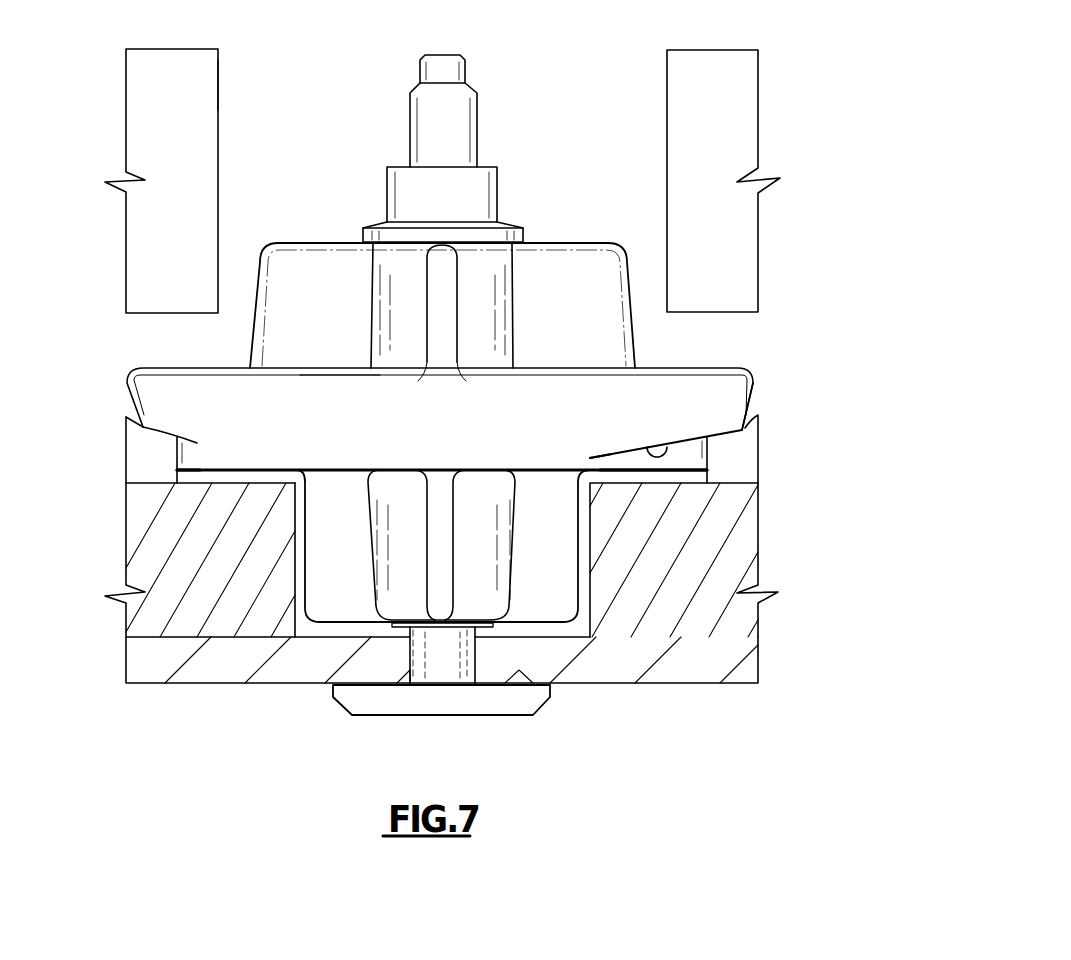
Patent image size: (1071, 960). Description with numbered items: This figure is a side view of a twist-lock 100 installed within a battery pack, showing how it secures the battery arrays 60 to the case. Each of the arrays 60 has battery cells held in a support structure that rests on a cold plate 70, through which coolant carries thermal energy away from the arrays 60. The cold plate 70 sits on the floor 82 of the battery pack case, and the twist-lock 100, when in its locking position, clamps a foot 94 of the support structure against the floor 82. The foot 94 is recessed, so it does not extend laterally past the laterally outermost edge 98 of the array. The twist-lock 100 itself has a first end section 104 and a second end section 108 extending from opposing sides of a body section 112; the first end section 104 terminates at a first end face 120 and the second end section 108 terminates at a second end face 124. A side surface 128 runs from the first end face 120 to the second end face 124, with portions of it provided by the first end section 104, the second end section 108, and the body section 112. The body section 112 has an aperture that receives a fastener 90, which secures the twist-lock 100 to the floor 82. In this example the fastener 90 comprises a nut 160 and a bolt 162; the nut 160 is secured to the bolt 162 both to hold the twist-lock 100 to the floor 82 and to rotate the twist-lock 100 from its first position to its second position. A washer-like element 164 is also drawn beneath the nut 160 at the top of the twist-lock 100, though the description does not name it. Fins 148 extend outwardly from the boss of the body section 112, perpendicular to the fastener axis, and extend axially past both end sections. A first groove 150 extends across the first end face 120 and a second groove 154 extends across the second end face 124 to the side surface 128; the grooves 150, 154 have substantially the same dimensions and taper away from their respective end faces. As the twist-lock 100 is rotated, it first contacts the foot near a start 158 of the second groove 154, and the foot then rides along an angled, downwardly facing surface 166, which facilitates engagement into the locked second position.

The arrays 60 is at (157, 67).
The laterally outermost edge 98 is at (217, 86).
The twist-lock 100 is at (325, 153).
The bolt 162 is at (452, 103).
The fastener 90 is at (455, 135).
The nut 160 is at (487, 193).
The washer 164 is at (516, 224).
The fins 148 is at (590, 270).
The side surface 128 is at (335, 393).
The first end face 120 is at (128, 393).
The second end face 124 is at (765, 365).
The downwardly facing surface 166 is at (667, 440).
The start of the groove 158 is at (600, 448).
The second end section 108 is at (778, 398).
The first end section 104 is at (92, 430).
The foot 94 is at (142, 460).
The first groove 150 is at (162, 480).
The body section 112 is at (260, 490).
The cold plate 70 is at (615, 558).
The floor 82 is at (703, 675).
The second groove 154 is at (698, 483).